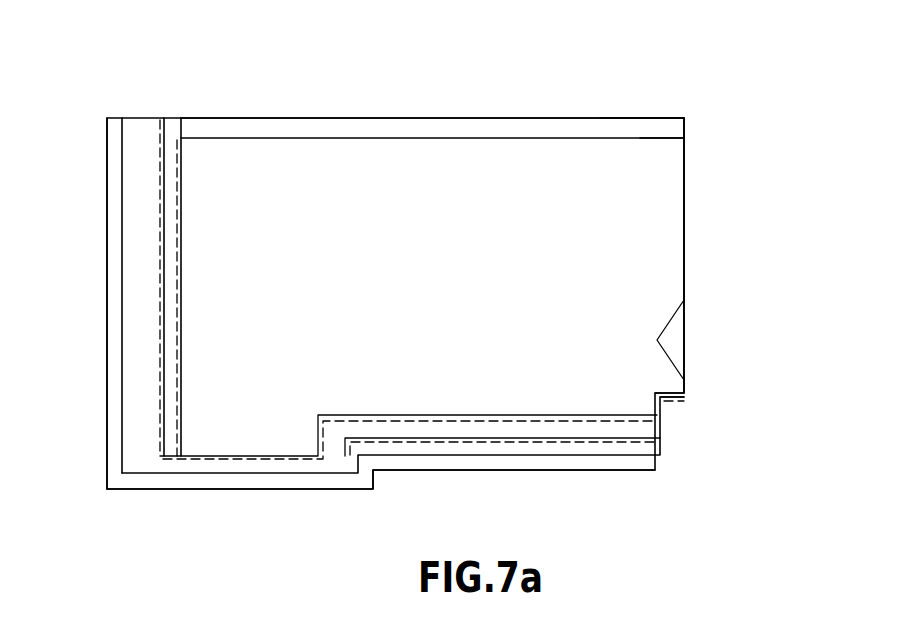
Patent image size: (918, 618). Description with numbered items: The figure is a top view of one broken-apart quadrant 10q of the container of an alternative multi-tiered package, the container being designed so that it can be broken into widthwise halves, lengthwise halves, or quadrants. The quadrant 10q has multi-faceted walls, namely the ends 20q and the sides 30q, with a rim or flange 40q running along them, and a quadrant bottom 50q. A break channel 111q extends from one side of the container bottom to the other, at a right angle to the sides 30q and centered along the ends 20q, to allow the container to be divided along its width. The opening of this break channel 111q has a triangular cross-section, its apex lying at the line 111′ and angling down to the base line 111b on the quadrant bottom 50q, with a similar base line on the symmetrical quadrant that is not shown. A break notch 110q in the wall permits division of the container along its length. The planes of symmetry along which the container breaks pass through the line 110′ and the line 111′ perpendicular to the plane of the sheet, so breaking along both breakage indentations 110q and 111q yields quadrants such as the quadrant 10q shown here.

The container quadrant 10q is at (486, 92).
The end 20q is at (107, 322).
The side 30q is at (210, 491).
The rim or flange 40q is at (162, 456).
The quadrant bottom 50q is at (655, 225).
The break notch 110q is at (670, 336).
The line of symmetry plane 110′ is at (685, 177).
The break channel 111q is at (565, 128).
The apex line of break channel 111′ is at (648, 117).
The base line of break channel 111b is at (672, 132).